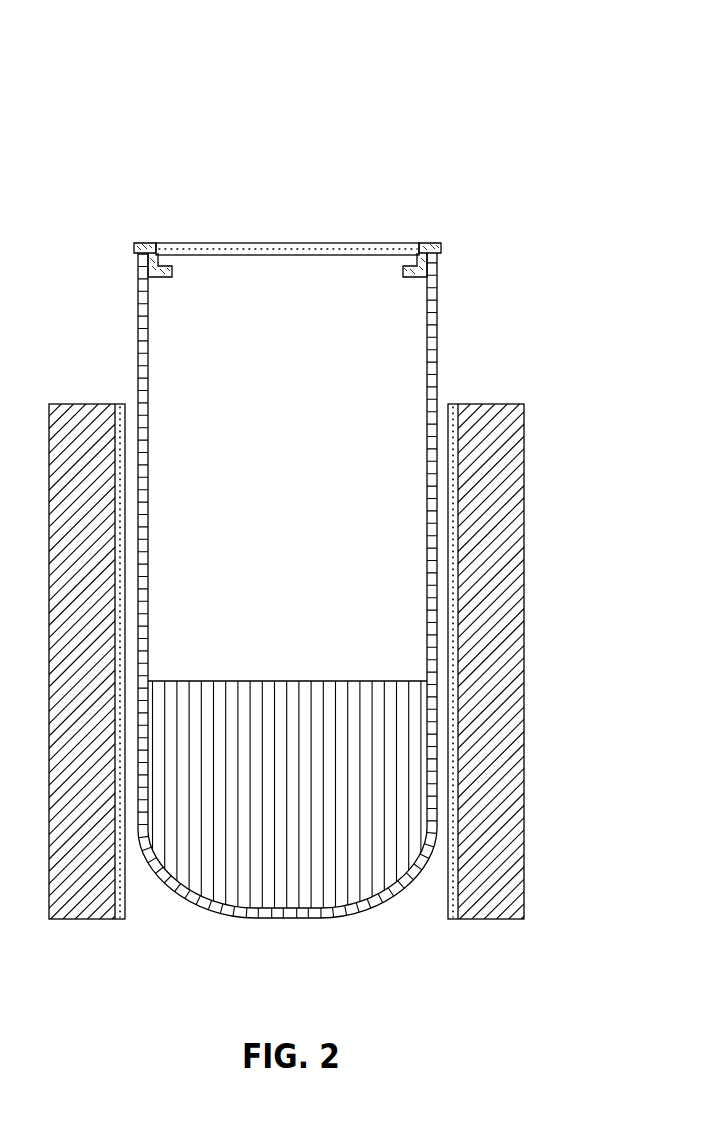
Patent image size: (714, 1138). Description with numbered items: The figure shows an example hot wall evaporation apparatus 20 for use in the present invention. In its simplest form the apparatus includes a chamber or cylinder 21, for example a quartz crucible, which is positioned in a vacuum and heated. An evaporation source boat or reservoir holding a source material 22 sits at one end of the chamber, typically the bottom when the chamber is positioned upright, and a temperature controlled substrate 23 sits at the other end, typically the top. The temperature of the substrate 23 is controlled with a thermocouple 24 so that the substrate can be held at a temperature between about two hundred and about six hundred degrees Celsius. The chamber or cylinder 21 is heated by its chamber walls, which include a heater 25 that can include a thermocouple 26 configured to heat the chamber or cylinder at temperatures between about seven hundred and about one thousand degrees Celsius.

The hot wall evaporation apparatus 20 is at (391, 130).
The chamber or cylinder 21 is at (446, 569).
The source material 22 is at (314, 882).
The substrate 23 is at (413, 232).
The thermocouple 24 is at (291, 241).
The heater 25 is at (82, 393).
The thermocouple 26 is at (130, 822).